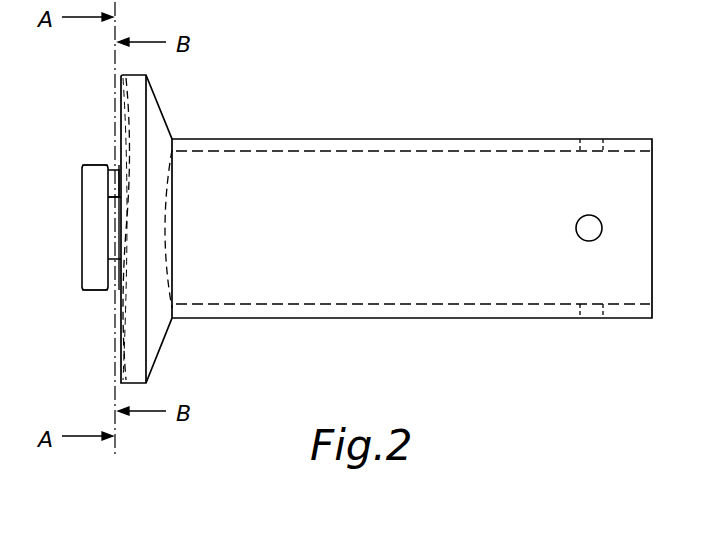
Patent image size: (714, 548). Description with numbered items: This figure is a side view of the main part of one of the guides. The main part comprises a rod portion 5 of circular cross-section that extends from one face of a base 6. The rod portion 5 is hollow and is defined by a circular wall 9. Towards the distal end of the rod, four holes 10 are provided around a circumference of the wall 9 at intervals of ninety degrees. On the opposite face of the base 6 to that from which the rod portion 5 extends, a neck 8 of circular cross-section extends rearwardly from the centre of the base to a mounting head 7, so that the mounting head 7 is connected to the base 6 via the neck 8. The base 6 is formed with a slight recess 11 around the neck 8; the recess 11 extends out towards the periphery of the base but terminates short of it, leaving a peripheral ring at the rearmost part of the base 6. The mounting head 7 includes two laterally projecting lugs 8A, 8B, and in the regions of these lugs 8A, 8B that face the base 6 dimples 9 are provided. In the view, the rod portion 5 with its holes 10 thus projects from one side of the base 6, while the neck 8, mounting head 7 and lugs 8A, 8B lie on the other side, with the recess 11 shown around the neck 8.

The rod portion 5 is at (322, 138).
The base 6 is at (163, 120).
The mounting head 7 is at (88, 237).
The neck 8 is at (108, 246).
The laterally projecting lug 8A is at (85, 189).
The laterally projecting lug 8B is at (96, 290).
The circular wall 9 is at (110, 177).
The holes 10 is at (580, 137).
The recess 11 is at (120, 130).